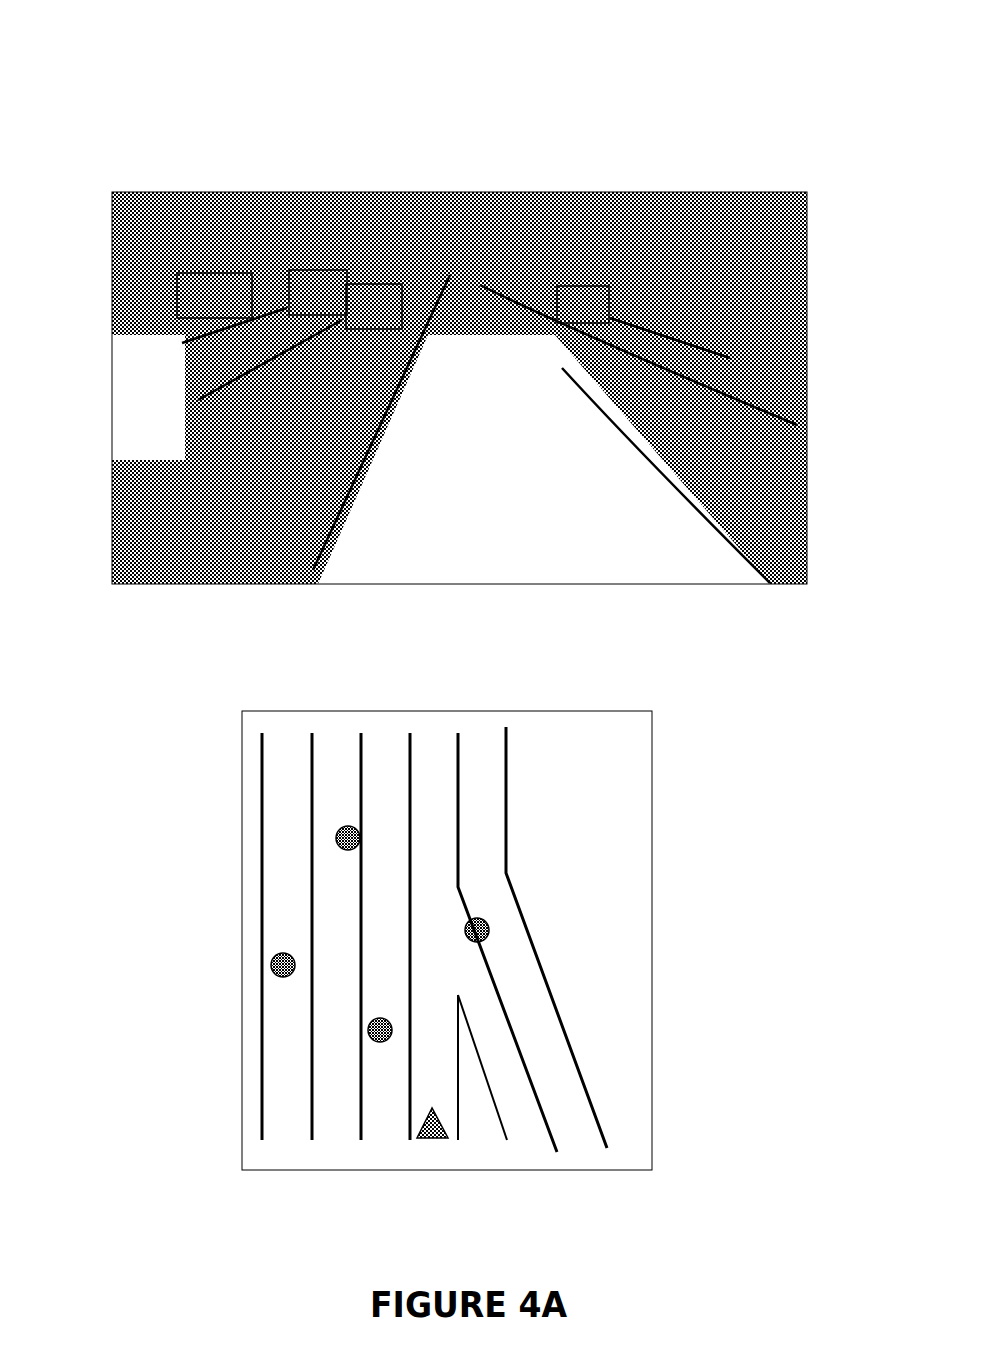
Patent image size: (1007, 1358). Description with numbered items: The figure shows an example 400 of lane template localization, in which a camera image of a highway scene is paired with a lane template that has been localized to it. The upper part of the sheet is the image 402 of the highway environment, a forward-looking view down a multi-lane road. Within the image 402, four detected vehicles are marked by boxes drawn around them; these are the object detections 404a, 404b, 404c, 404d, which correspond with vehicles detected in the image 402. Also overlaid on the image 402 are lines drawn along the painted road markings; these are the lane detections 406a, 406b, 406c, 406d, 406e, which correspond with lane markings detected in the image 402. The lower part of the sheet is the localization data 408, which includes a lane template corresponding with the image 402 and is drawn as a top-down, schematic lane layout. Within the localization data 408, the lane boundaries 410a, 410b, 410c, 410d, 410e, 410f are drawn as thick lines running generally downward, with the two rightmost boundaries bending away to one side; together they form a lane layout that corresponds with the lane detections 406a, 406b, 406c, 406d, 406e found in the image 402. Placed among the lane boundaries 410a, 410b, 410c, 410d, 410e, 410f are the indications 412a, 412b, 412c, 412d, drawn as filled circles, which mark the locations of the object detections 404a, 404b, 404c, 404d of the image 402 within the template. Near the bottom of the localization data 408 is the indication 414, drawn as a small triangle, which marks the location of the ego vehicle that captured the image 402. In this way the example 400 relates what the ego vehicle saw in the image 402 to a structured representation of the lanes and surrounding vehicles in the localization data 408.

The example of lane template localization 400 is at (88, 58).
The image 402 is at (703, 180).
The object detection 404a is at (172, 268).
The object detection 404b is at (293, 260).
The object detection 404c is at (377, 277).
The object detection 404d is at (583, 278).
The lane detection 406a is at (200, 400).
The lane detection 406b is at (347, 472).
The lane detection 406c is at (632, 462).
The lane detection 406d is at (722, 343).
The lane detection 406e is at (785, 412).
The localization data 408 is at (658, 742).
The lane boundary 410a is at (260, 807).
The lane boundary 410b is at (308, 768).
The lane boundary 410c is at (358, 750).
The lane boundary 410d is at (410, 740).
The lane boundary 410e is at (458, 733).
The lane boundary 410f is at (507, 752).
The indication of location of object detection 412a is at (328, 847).
The indication of location of object detection 412b is at (272, 981).
The indication of location of object detection 412c is at (366, 1046).
The indication of location of object detection 412d is at (490, 927).
The indication of location of ego vehicle 414 is at (427, 1134).